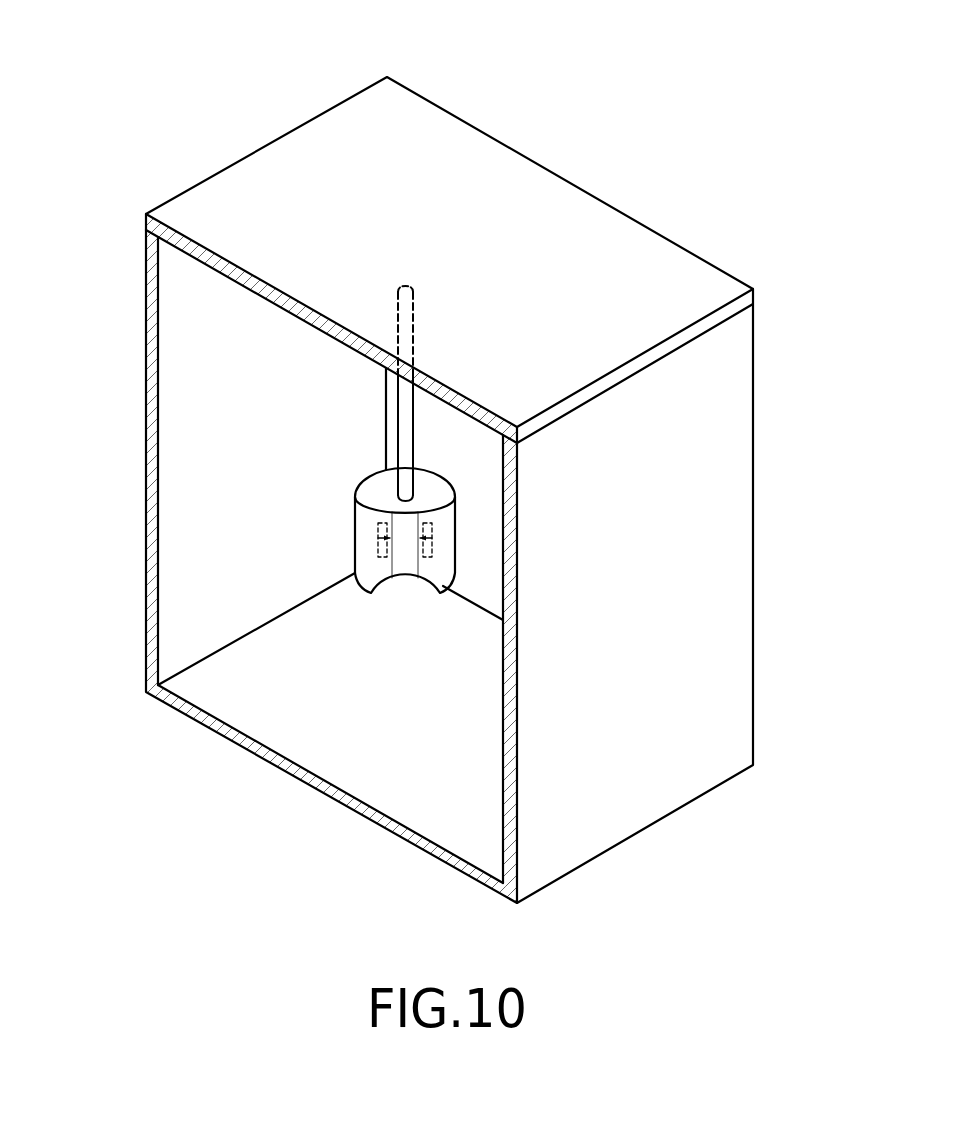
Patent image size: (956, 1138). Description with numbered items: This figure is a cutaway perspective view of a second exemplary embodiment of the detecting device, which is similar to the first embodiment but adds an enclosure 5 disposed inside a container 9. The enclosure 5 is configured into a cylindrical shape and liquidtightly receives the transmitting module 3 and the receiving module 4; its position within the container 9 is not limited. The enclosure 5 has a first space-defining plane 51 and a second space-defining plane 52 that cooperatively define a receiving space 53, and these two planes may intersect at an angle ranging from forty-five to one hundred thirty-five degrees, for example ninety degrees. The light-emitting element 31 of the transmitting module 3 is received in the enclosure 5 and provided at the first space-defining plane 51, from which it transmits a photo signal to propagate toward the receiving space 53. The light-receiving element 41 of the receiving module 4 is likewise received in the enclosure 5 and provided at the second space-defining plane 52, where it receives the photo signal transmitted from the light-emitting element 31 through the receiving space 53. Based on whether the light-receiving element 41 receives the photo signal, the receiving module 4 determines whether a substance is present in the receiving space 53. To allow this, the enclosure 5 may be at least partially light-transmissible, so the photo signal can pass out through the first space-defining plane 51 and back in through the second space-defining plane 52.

The container 9 is at (567, 172).
The enclosure 5 is at (458, 480).
The first space-defining plane 51 is at (428, 577).
The second space-defining plane 52 is at (382, 573).
The receiving space 53 is at (402, 543).
The transmitting module 3 is at (432, 532).
The light-emitting element 31 is at (432, 538).
The receiving module 4 is at (382, 527).
The light-receiving element 41 is at (378, 538).